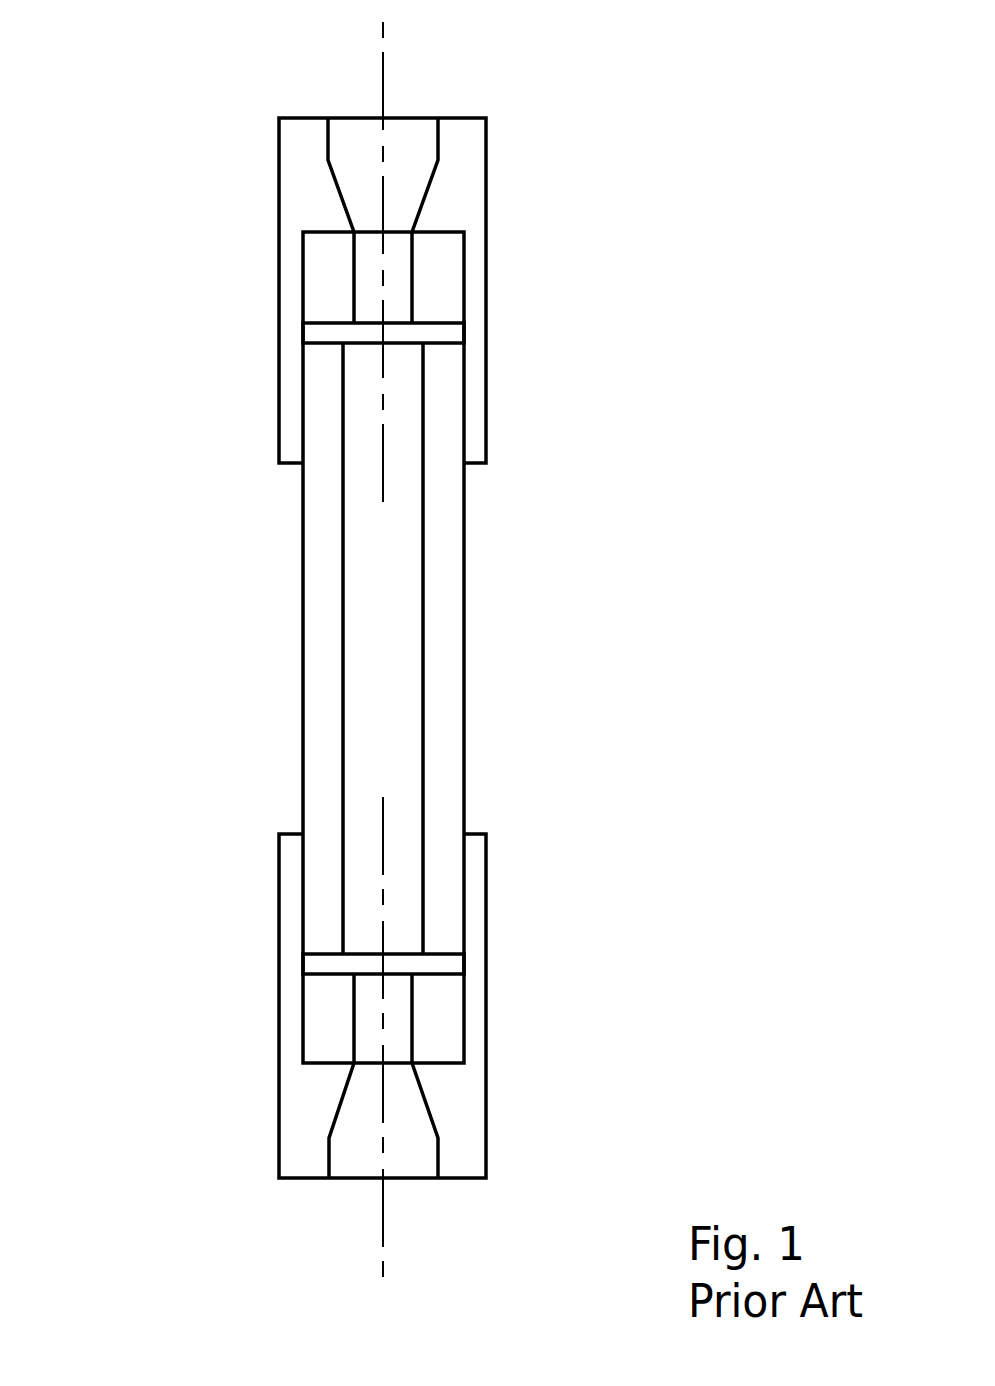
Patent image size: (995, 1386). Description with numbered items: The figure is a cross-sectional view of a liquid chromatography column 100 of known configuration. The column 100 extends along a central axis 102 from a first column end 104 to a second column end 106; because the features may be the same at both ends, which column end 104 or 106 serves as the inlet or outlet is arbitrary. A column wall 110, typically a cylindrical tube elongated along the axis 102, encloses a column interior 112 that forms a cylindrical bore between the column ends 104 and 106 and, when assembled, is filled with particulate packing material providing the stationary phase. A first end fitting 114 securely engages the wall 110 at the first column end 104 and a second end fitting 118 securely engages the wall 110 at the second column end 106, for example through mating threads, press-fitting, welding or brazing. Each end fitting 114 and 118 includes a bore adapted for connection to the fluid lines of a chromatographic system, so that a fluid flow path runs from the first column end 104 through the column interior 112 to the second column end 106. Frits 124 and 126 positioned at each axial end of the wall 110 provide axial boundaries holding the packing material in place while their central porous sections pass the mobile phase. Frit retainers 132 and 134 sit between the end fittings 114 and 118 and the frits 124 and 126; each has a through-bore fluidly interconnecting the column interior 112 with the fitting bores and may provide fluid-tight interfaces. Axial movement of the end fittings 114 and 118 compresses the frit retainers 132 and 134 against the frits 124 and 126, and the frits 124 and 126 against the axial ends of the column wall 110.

The liquid chromatography column 100 is at (84, 116).
The central axis 102 is at (383, 29).
The first column end 104 is at (625, 95).
The second column end 106 is at (500, 1262).
The column wall 110 is at (463, 550).
The column interior 112 is at (440, 678).
The first end fitting 114 is at (277, 188).
The second end fitting 118 is at (278, 1140).
The frit 124 is at (307, 339).
The frit 126 is at (310, 963).
The frit retainer 132 is at (467, 287).
The frit retainer 134 is at (465, 1023).